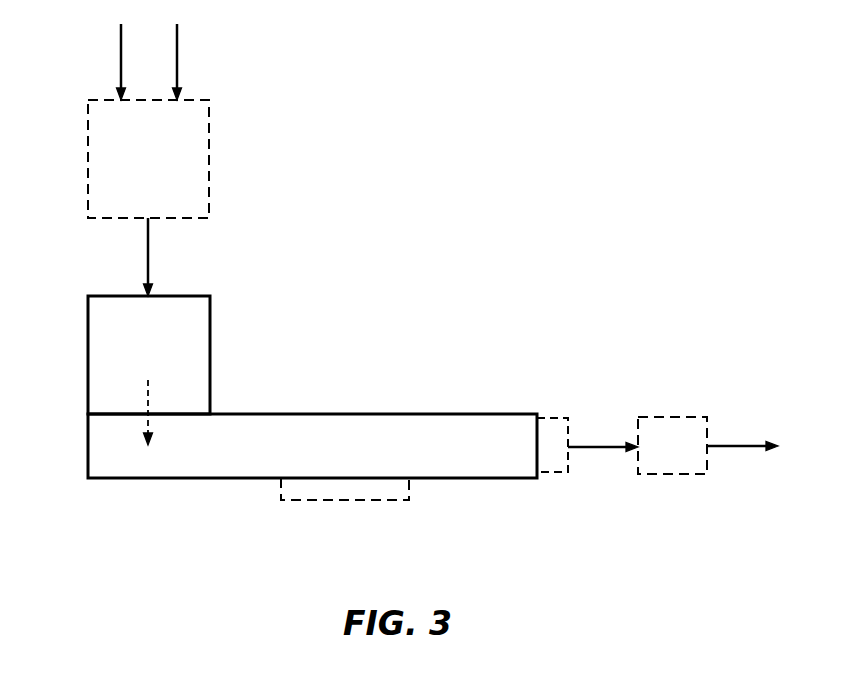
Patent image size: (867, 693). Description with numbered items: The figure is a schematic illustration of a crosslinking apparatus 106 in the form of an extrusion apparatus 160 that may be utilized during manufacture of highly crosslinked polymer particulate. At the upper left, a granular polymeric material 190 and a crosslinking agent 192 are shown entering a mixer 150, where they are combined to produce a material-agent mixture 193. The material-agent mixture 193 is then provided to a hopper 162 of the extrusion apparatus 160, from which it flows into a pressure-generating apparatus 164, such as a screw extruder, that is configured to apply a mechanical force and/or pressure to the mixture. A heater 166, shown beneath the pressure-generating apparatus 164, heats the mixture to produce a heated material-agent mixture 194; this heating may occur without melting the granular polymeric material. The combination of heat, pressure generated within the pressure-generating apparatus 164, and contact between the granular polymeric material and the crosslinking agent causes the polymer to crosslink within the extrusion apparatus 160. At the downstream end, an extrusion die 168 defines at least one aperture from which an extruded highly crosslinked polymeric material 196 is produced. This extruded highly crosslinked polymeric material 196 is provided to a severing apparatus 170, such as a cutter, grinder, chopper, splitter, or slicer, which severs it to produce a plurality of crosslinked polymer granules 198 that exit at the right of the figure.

The crosslinking apparatus 106 is at (662, 112).
The mixer 150 is at (88, 148).
The extrusion apparatus 160 is at (414, 250).
The hopper 162 is at (88, 360).
The pressure-generating apparatus 164 is at (188, 480).
The heater 166 is at (340, 500).
The extrusion die 168 is at (548, 478).
The severing apparatus 170 is at (663, 476).
The granular polymeric material 190 is at (121, 51).
The crosslinking agent 192 is at (177, 51).
The material-agent mixture 193 is at (148, 250).
The heated material-agent mixture 194 is at (326, 435).
The extruded highly crosslinked polymeric material 196 is at (596, 441).
The crosslinked polymer granules 198 is at (745, 449).